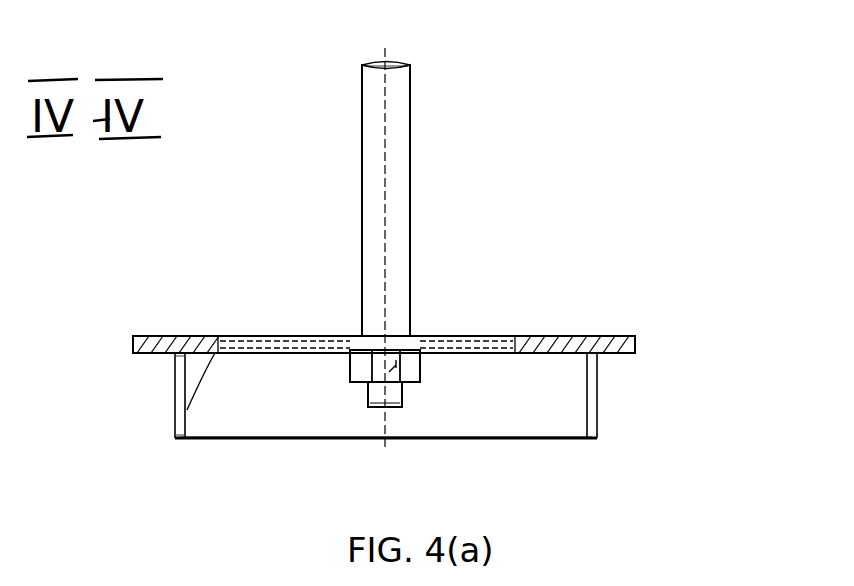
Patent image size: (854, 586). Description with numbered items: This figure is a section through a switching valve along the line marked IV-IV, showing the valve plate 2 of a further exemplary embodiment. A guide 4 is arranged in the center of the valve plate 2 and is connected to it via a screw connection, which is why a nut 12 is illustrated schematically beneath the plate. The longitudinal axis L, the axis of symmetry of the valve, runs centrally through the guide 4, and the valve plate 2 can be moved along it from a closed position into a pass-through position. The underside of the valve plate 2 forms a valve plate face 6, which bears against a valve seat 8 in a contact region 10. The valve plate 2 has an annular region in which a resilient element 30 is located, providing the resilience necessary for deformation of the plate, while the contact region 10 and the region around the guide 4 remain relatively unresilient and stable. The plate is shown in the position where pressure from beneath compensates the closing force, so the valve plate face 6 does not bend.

The valve plate 2 is at (607, 331).
The guide 4 is at (395, 176).
The valve plate face 6 is at (173, 424).
The valve seat 8 is at (597, 438).
The contact region 10 is at (603, 360).
The nut 12 is at (428, 335).
The resilient element 30 is at (265, 335).
The longitudinal axis L is at (386, 106).